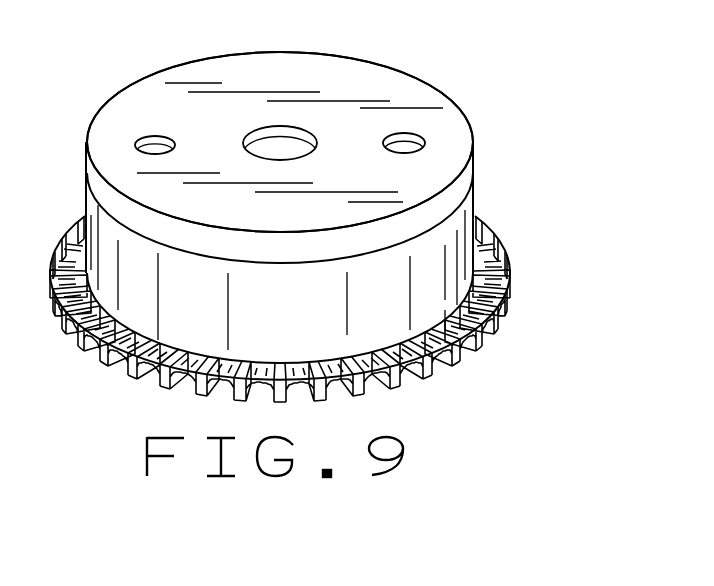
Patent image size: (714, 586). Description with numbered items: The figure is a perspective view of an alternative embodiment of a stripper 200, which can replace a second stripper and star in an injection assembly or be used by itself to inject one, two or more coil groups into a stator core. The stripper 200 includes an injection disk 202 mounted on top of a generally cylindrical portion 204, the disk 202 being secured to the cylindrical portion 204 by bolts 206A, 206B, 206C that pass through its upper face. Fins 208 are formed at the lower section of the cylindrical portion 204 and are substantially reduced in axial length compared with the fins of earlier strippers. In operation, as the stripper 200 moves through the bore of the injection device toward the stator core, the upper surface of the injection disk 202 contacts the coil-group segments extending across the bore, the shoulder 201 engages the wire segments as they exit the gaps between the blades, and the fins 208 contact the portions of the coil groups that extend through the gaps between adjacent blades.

The stripper 200 is at (478, 205).
The shoulder 201 is at (473, 137).
The injection disk 202 is at (447, 120).
The generally cylindrical portion 204 is at (445, 258).
The bolt 206A is at (153, 140).
The bolt 206B is at (281, 128).
The bolt 206C is at (412, 140).
The fins 208 is at (470, 356).